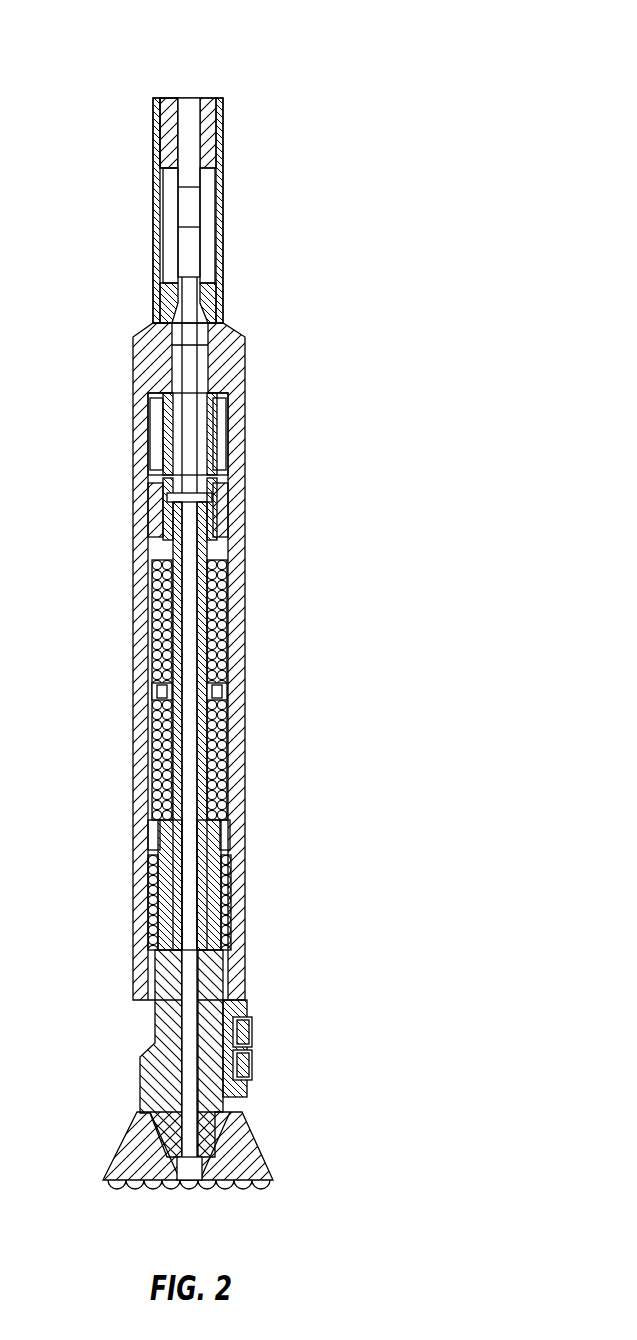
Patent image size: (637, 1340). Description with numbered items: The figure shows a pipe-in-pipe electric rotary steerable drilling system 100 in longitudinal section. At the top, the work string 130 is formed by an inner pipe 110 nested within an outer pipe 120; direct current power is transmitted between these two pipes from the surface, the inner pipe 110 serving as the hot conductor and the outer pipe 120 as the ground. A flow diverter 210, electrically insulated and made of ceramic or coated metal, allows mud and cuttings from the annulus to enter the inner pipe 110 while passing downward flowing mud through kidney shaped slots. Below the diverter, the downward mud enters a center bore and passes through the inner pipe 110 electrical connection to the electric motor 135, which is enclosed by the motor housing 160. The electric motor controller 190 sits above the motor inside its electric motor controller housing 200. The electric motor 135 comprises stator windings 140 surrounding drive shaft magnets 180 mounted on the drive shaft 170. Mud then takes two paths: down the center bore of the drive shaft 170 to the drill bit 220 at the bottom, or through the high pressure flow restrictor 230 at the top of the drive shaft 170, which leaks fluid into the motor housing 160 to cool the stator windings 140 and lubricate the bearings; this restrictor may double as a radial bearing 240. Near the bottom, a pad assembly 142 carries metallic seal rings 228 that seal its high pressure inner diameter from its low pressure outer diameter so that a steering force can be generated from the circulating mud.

The rotary steerable drilling system 100 is at (402, 46).
The work string 130 is at (130, 103).
The outer pipe 120 is at (223, 120).
The flow diverter 210 is at (160, 150).
The inner pipe 110 is at (203, 182).
The electric motor controller 190 is at (232, 453).
The high pressure flow restrictor 230 is at (230, 545).
The radial bearing 240 is at (217, 509).
The drive shaft magnets 180 is at (157, 727).
The electric motor 135 is at (222, 723).
The stator windings 140 is at (232, 755).
The motor housing 160 is at (248, 797).
The electric motor controller housing 200 is at (245, 893).
The drive shaft 170 is at (155, 1028).
The pad assembly 142 is at (272, 1034).
The metallic seal ring 228 is at (250, 1052).
The drill bit 220 is at (128, 1172).